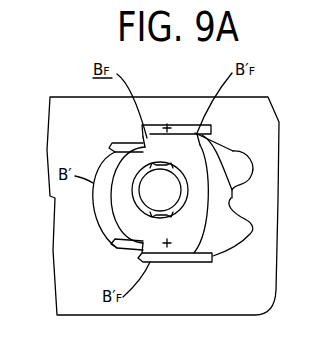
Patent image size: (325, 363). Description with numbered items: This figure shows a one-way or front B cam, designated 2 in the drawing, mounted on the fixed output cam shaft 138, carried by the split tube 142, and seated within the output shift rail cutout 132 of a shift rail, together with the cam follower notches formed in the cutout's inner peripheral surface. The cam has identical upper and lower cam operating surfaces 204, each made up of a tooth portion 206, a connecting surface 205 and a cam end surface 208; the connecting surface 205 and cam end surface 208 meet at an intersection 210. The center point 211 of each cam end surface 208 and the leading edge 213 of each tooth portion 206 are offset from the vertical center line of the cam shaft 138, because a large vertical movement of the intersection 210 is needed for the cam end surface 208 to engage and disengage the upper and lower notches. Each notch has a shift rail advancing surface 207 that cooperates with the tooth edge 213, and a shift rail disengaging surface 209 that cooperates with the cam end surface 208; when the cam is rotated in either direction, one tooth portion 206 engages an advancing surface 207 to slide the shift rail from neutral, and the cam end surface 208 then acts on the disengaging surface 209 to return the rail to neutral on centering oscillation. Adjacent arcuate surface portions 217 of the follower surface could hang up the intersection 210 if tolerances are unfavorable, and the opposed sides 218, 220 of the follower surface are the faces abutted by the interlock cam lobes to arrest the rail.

The housing block 2 is at (268, 97).
The output shift rail cutout 132 is at (187, 250).
The output cam shaft 138 is at (150, 197).
The split tube 142 is at (136, 202).
The opposed side of cam follower surface B' 218 is at (90, 195).
The leading edge of tooth portion 213 is at (112, 149).
The tooth portion 206 is at (141, 136).
The shift rail advancing surface 207 is at (141, 141).
The connecting surface 205 is at (167, 133).
The center point of cam end surface 211 is at (186, 133).
The intersection 210 is at (200, 146).
The cam operating surface 204 is at (210, 127).
The shift rail disengaging surface 209 is at (212, 133).
The arcuate surface portion 217 is at (250, 158).
The cam end surface 208 is at (214, 152).
The opposed side of cam follower surface B' 220 is at (230, 198).